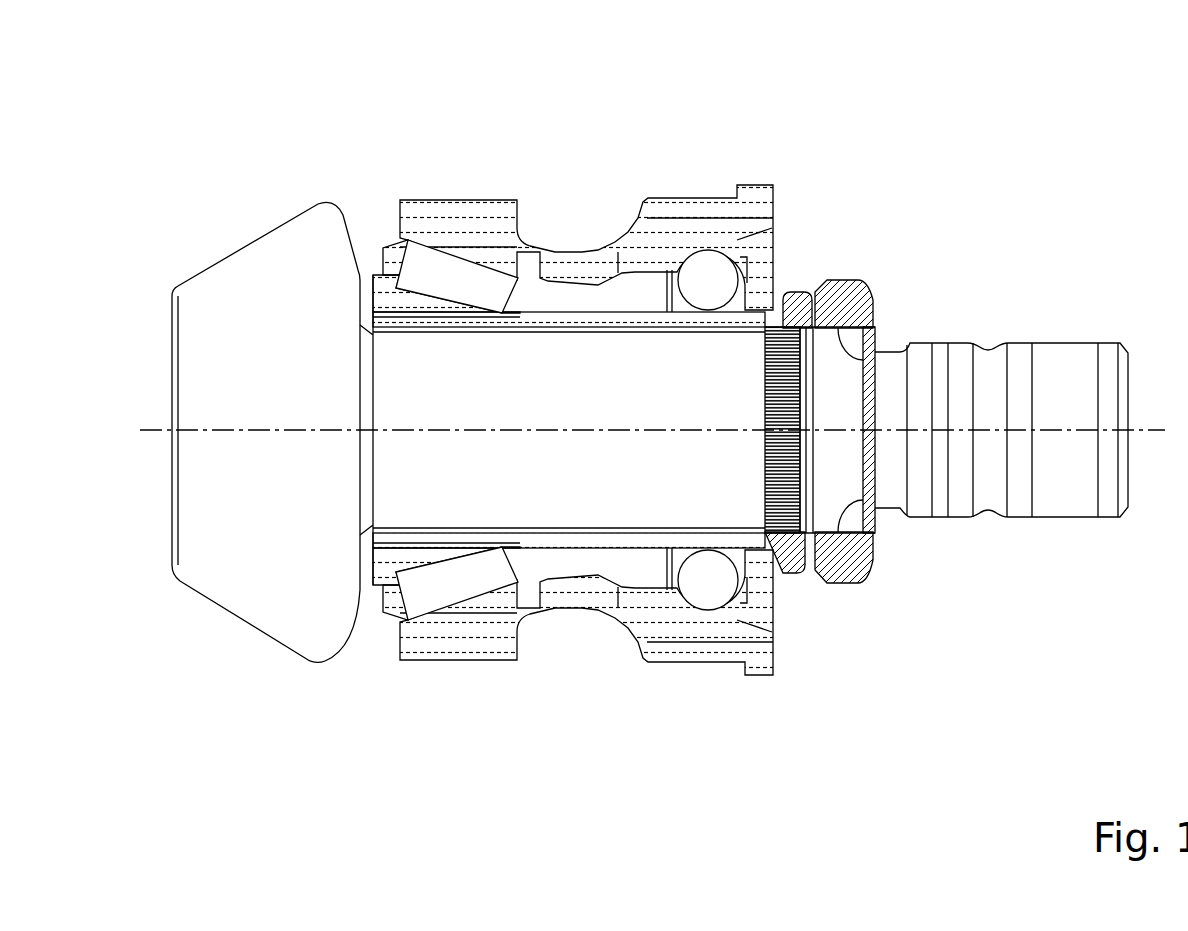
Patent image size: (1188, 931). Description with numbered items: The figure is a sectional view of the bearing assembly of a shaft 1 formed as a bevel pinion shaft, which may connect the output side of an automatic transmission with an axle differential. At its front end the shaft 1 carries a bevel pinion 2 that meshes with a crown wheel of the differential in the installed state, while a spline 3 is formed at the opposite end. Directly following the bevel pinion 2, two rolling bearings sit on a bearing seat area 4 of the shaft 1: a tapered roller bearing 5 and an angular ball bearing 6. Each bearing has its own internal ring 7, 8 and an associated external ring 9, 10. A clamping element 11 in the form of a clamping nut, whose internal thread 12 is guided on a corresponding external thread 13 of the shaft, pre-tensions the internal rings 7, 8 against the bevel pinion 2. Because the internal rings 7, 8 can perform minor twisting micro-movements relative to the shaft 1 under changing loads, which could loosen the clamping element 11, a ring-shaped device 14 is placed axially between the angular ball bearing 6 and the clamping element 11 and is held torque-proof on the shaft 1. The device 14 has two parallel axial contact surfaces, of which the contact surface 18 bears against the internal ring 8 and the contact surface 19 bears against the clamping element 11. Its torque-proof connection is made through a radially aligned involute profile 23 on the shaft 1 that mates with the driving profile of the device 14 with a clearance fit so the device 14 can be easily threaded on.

The shaft 1 is at (398, 495).
The bevel pinion 2 is at (255, 280).
The spline 3 is at (875, 353).
The bearing seat area 4 is at (578, 322).
The tapered roller bearing 5 is at (455, 280).
The angular ball bearing 6 is at (698, 278).
The internal ring 7 is at (383, 265).
The internal ring 8 is at (765, 246).
The external ring 9 is at (497, 227).
The external ring 10 is at (660, 228).
The clamping element 11 is at (863, 290).
The internal thread 12 is at (973, 342).
The external thread 13 is at (875, 507).
The device 14 is at (783, 577).
The contact surface 18 is at (754, 570).
The contact surface 19 is at (835, 285).
The profile 23 is at (807, 573).